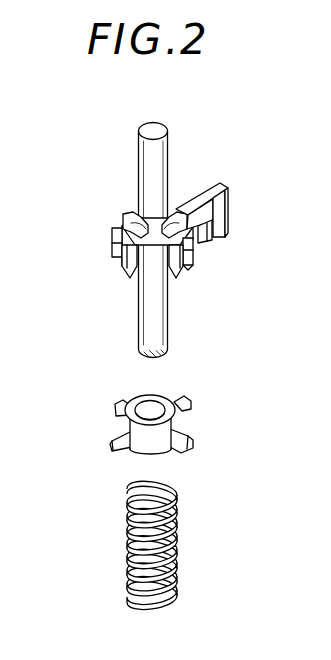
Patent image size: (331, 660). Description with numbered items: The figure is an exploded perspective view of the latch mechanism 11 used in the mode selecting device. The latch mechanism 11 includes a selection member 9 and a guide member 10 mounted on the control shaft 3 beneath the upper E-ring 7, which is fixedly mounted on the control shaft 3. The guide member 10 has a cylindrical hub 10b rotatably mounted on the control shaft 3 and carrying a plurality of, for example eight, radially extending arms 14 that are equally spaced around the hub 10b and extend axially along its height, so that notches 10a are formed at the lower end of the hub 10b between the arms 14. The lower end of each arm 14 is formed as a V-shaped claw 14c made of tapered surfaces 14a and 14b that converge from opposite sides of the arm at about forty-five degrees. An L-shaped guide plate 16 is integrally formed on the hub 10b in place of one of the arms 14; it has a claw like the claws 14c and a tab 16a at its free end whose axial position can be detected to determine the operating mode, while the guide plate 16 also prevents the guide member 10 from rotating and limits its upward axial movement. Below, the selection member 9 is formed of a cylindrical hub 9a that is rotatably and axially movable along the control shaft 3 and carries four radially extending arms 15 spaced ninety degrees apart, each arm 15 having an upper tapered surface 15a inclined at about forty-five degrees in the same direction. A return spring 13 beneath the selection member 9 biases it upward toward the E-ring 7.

The control shaft 3 is at (163, 150).
The E-ring 7 is at (178, 212).
The selection member 9 is at (140, 399).
The cylindrical hub 9a is at (133, 417).
The guide member 10 is at (113, 250).
The notches 10a is at (169, 264).
The cylindrical hub 10b is at (112, 233).
The latch mechanism 11 is at (104, 192).
The return spring 13 is at (174, 535).
The radially extending arms 14 is at (149, 287).
The tapered surface 14a is at (133, 275).
The tapered surface 14b is at (191, 266).
The V-shaped claw 14c is at (173, 272).
The radially extending arms 15 is at (190, 412).
The tapered surface 15a is at (192, 402).
The L-shaped guide plate 16 is at (229, 205).
The tab 16a is at (218, 240).